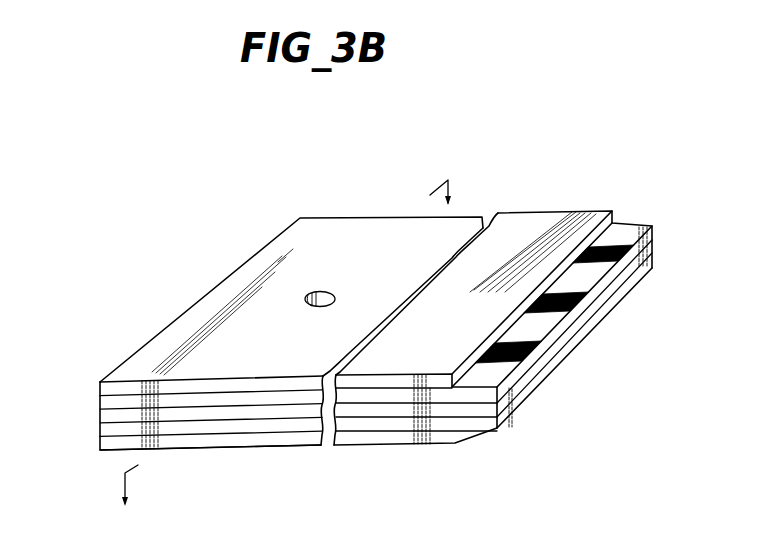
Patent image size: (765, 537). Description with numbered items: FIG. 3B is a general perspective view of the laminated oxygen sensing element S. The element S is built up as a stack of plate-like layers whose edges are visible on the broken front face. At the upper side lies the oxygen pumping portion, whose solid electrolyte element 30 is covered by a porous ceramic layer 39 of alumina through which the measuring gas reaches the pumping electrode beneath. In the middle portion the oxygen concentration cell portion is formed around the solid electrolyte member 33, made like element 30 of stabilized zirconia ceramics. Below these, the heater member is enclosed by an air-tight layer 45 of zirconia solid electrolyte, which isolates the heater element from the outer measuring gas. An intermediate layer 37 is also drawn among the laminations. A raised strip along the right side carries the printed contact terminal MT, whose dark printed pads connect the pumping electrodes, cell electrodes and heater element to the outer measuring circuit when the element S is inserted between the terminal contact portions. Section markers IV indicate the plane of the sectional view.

The porous ceramic layer 39 is at (100, 388).
The solid electrolyte element 30 is at (100, 402).
The third layer 37 is at (100, 416).
The solid electrolyte member 33 is at (100, 430).
The air-tight layer 45 is at (100, 445).
The oxygen sensing element S is at (562, 207).
The printed contact terminal MT is at (635, 219).
The section line IV- IV is at (283, 343).